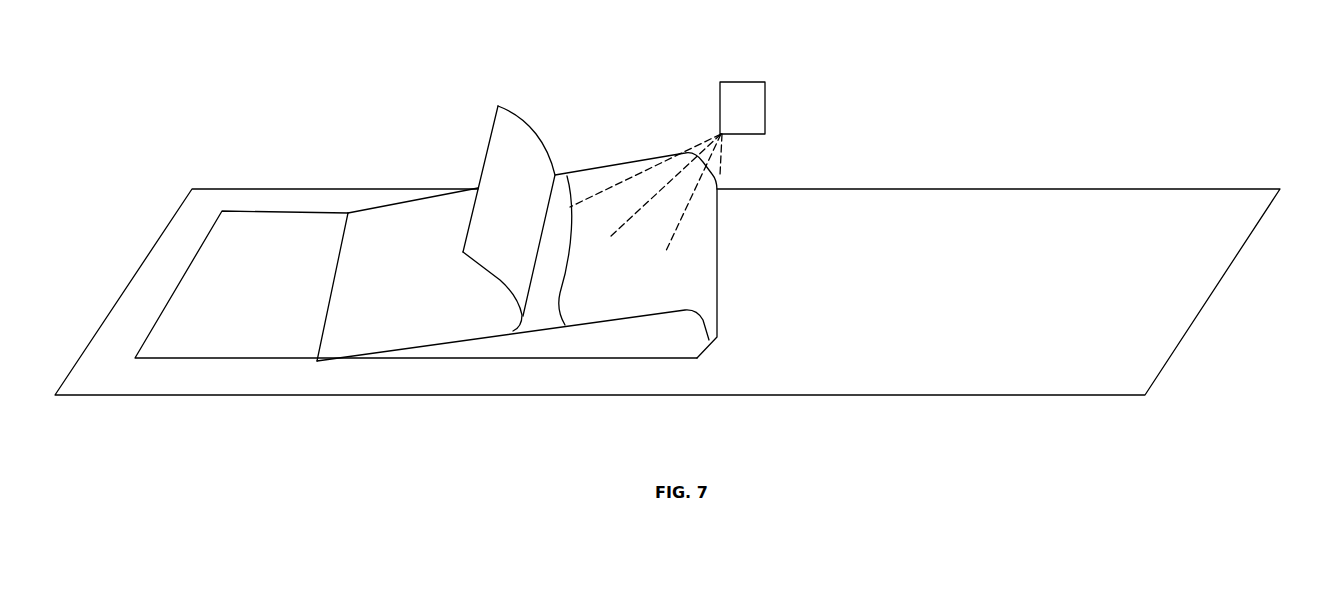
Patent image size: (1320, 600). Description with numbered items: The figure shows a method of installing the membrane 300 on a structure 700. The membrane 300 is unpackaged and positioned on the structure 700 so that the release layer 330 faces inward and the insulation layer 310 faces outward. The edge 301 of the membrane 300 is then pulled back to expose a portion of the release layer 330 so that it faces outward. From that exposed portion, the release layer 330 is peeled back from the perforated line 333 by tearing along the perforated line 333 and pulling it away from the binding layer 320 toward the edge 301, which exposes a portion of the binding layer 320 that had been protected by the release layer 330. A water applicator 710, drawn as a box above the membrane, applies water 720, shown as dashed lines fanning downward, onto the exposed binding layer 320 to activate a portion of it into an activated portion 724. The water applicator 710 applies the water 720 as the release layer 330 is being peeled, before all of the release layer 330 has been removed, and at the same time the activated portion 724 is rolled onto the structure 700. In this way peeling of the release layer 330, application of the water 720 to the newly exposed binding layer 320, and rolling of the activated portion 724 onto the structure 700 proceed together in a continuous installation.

The membrane 300 is at (426, 257).
The edge 301 is at (342, 245).
The insulation layer 310 is at (268, 292).
The binding layer 320 is at (517, 301).
The release layer 330 is at (518, 197).
The perforated line 333 is at (490, 128).
The structure 700 is at (949, 289).
The water applicator 710 is at (778, 90).
The water 720 is at (720, 175).
The activated portion 724 is at (632, 292).